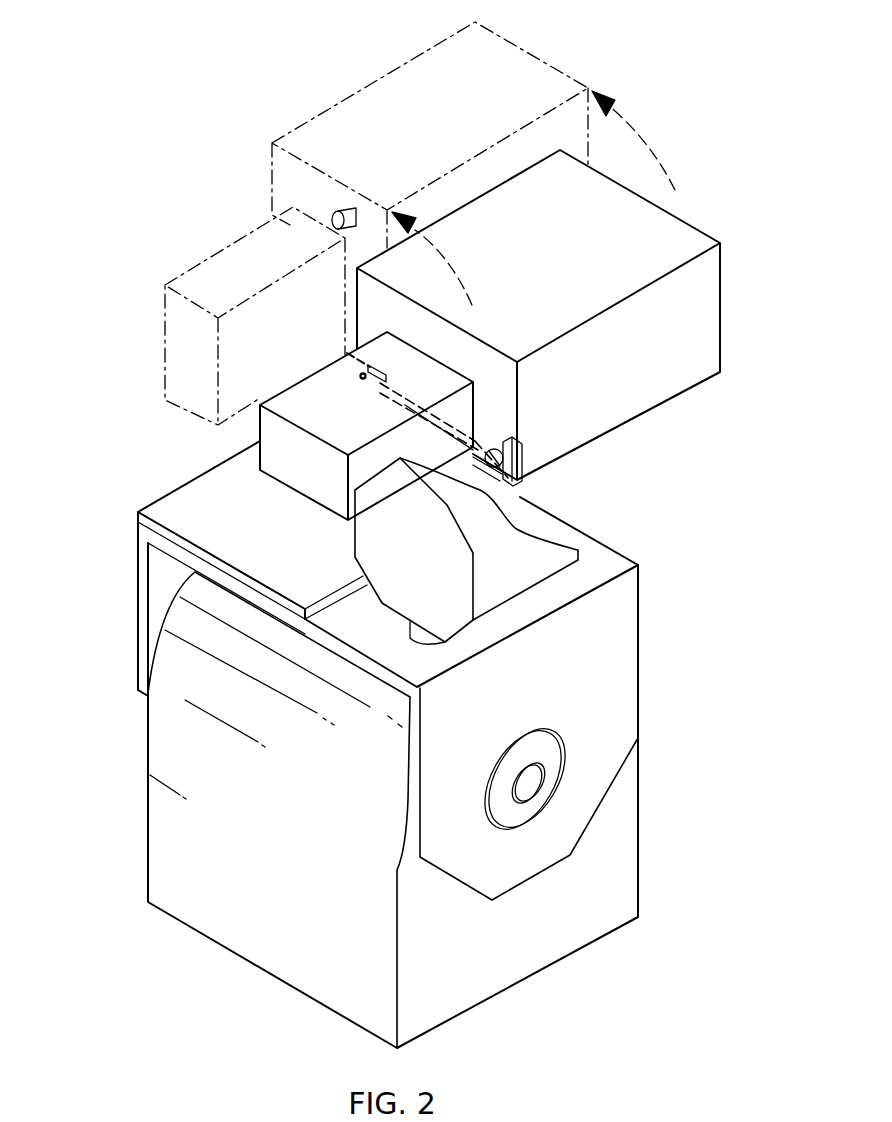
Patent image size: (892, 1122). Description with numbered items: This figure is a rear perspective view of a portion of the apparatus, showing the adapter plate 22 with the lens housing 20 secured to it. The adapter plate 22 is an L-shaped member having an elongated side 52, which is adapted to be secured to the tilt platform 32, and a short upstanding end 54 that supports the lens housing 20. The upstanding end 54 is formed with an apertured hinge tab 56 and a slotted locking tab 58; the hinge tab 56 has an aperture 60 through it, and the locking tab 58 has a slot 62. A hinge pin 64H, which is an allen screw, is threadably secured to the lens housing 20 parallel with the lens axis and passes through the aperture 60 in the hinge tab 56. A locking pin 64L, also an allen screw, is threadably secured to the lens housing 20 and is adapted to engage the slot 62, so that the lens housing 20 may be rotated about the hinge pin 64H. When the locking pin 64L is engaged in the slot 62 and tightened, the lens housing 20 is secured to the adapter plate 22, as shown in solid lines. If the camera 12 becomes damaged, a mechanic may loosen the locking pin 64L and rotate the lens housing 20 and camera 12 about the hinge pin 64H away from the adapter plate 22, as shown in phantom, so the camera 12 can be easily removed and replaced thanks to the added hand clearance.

The camera 12 is at (207, 273).
The lens housing 20 is at (340, 120).
The adapter plate 22 is at (165, 502).
The tilt platform 32 is at (610, 555).
The elongated side 52 is at (167, 522).
The short upstanding end 54 is at (340, 378).
The hinge tab 56 is at (377, 367).
The locking tab 58 is at (525, 466).
The aperture 60 is at (365, 382).
The slot 62 is at (507, 442).
The hinge pin 64H is at (358, 384).
The locking pin 64L is at (347, 212).